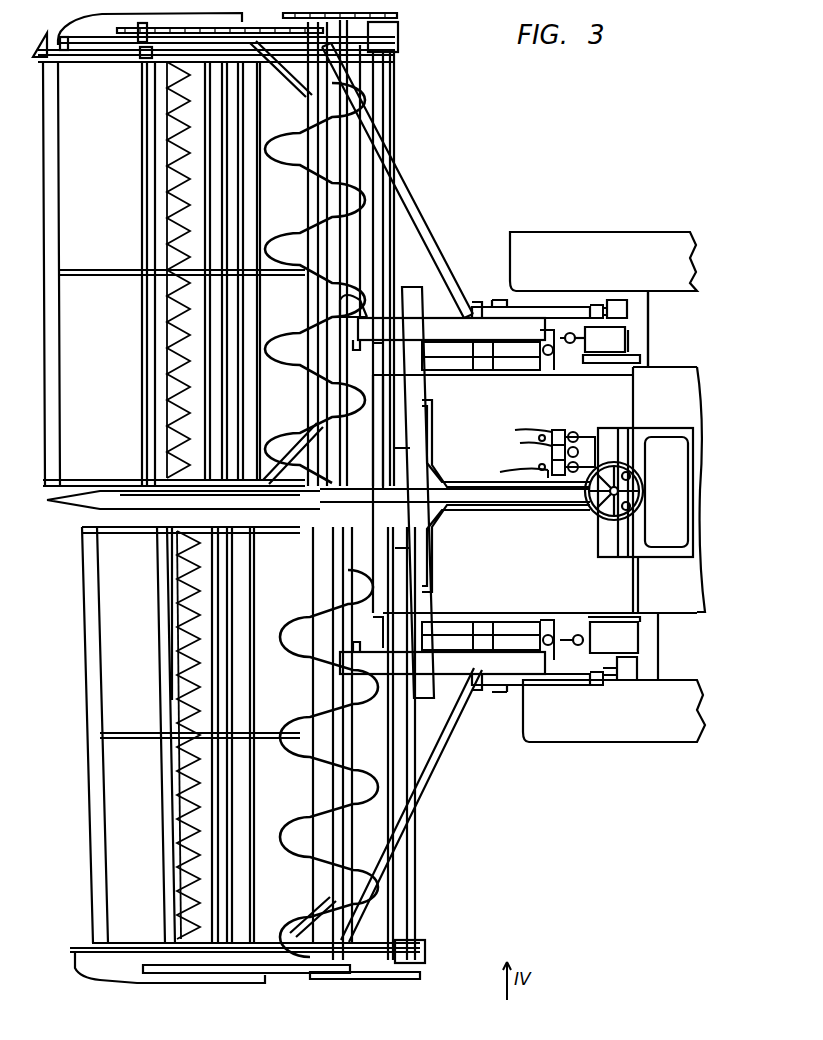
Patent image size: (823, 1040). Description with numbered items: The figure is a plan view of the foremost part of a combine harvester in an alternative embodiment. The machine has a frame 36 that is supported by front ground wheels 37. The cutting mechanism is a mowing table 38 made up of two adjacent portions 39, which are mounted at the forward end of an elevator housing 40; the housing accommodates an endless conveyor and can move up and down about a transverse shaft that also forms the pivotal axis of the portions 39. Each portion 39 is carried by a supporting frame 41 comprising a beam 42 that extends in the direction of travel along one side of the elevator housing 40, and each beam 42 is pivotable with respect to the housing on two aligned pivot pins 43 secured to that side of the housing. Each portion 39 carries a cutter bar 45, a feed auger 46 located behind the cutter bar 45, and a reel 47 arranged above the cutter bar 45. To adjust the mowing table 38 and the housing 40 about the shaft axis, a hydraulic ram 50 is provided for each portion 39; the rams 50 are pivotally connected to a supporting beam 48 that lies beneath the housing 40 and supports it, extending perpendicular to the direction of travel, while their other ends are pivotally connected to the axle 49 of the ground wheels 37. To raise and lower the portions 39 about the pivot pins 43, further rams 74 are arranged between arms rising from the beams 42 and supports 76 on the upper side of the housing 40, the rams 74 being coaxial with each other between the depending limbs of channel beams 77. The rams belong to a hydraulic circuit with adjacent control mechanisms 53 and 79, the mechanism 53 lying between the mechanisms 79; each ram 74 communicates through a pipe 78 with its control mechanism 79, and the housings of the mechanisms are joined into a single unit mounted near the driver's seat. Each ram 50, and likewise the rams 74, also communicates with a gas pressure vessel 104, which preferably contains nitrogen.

The frame 36 is at (688, 368).
The front ground wheels 37 is at (562, 236).
The mowing table 38 is at (80, 508).
The portions 39 is at (384, 116).
The elevator housing 40 is at (630, 403).
The supporting frame 41 is at (417, 203).
The beam 42 is at (482, 305).
The pivot pins 43 is at (398, 377).
The cutter bar 45 is at (167, 366).
The feed auger 46 is at (276, 268).
The reel 47 is at (60, 410).
The supporting beam 48 is at (540, 358).
The axle 49 is at (650, 326).
The hydraulic ram 50 is at (545, 305).
The control mechanism 53 is at (545, 452).
The hydraulic rams 74 is at (406, 447).
The supports 76 is at (408, 492).
The channel beams 77 is at (425, 393).
The pipe 78 is at (433, 455).
The control mechanisms 79 is at (515, 472).
The gas pressure vessel 104 is at (590, 302).